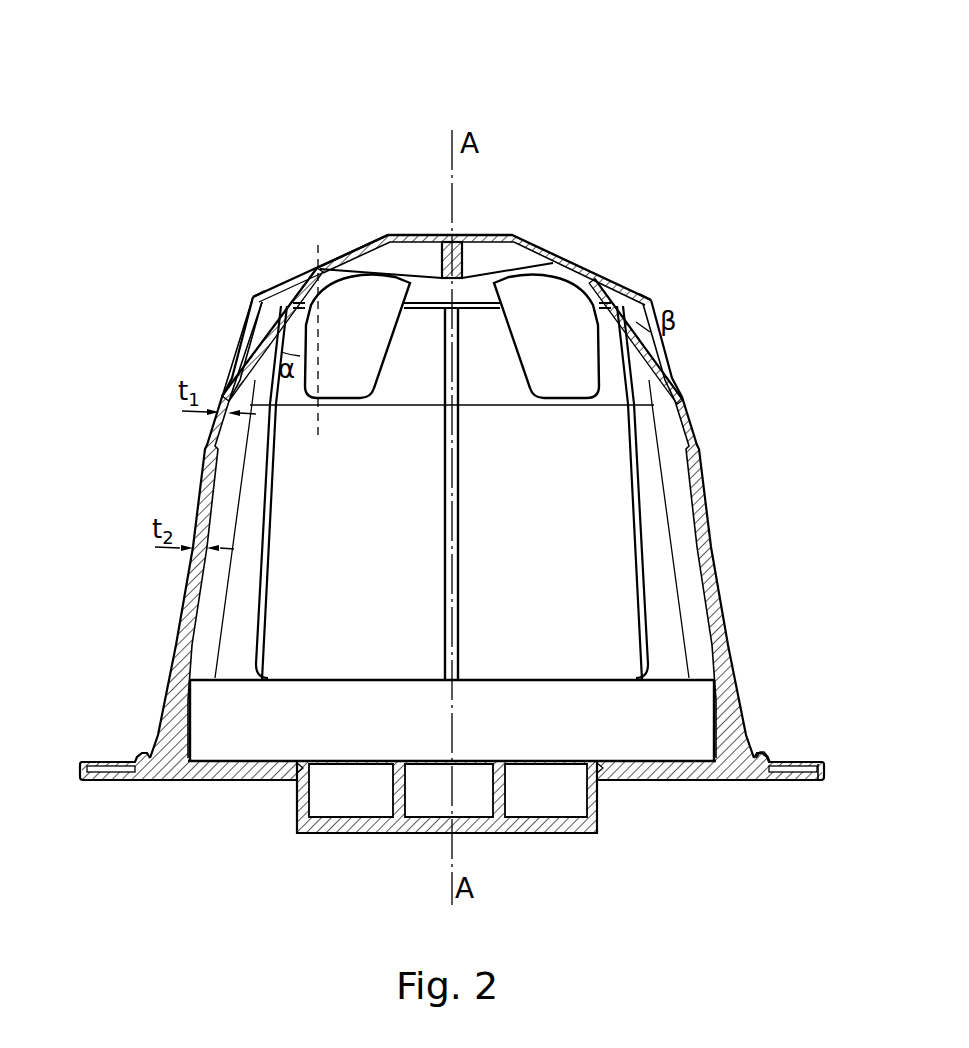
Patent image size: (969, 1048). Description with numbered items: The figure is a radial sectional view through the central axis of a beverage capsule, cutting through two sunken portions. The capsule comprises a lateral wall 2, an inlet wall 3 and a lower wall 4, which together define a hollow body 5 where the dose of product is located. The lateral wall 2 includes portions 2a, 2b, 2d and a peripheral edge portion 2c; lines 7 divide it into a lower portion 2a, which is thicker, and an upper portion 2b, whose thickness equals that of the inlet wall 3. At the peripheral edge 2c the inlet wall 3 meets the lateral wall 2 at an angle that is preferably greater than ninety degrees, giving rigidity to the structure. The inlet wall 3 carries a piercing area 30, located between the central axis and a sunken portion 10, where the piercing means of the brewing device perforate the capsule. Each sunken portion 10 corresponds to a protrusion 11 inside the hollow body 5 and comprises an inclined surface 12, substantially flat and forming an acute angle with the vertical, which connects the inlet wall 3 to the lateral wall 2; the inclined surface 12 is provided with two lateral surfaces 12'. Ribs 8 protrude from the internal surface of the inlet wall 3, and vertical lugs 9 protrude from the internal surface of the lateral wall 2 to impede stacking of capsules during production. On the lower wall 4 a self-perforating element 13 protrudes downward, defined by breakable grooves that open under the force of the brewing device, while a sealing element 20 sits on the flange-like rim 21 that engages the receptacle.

The lateral wall 2 is at (205, 492).
The lower portion of the lateral wall 2a is at (140, 676).
The upper portion of the lateral wall 2b is at (222, 348).
The peripheral edge of the lateral wall 2c is at (254, 297).
The portion of the lateral wall 2d is at (734, 711).
The inlet wall 3 is at (373, 226).
The lower wall 4 is at (228, 802).
The hollow body 5 is at (596, 527).
The lines 7 is at (700, 438).
The ribs 8 is at (688, 380).
The vertical lugs 9 is at (662, 534).
The sunken portion 10 is at (282, 292).
The protrusion 11 is at (380, 309).
The inclined surface 12 is at (486, 347).
The lateral surfaces 12' is at (187, 262).
The self-perforating element 13 is at (622, 804).
The sealing element 20 is at (756, 763).
The flange-like rim 21 is at (770, 804).
The piercing area 30 is at (356, 227).